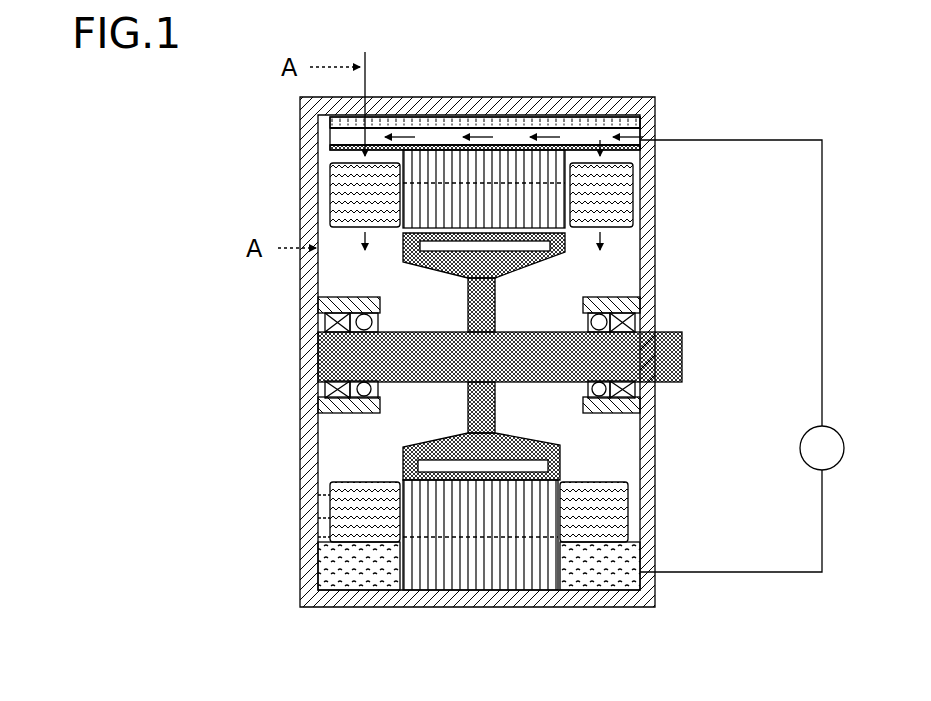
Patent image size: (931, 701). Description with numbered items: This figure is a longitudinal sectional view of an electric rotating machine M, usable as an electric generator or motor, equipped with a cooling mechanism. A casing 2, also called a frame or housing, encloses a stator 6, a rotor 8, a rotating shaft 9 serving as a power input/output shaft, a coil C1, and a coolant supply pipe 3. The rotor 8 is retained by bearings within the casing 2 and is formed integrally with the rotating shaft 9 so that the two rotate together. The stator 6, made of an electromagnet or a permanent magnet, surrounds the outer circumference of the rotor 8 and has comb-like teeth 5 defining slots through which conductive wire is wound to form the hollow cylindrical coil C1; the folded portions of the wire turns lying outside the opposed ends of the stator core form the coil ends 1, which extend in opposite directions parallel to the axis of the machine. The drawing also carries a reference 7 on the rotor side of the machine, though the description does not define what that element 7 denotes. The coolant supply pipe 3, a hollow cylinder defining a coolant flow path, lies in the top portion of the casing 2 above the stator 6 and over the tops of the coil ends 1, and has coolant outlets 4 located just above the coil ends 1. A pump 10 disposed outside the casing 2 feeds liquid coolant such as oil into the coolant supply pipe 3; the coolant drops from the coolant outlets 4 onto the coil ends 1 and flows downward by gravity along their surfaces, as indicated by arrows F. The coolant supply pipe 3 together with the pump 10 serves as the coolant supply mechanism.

The coil end 1 is at (316, 205).
The casing 2 is at (308, 285).
The coolant supply pipe 3 is at (592, 115).
The coolant outlet 4 is at (330, 150).
The teeth 5 is at (484, 351).
The stator 6 is at (448, 165).
The gap 7 is at (535, 245).
The rotor 8 is at (530, 275).
The rotating shaft 9 is at (693, 358).
The pump 10 is at (802, 452).
The coil C1 is at (423, 268).
The arrows representing coolant flow paths F is at (488, 128).
The electric rotating machine M is at (386, 58).